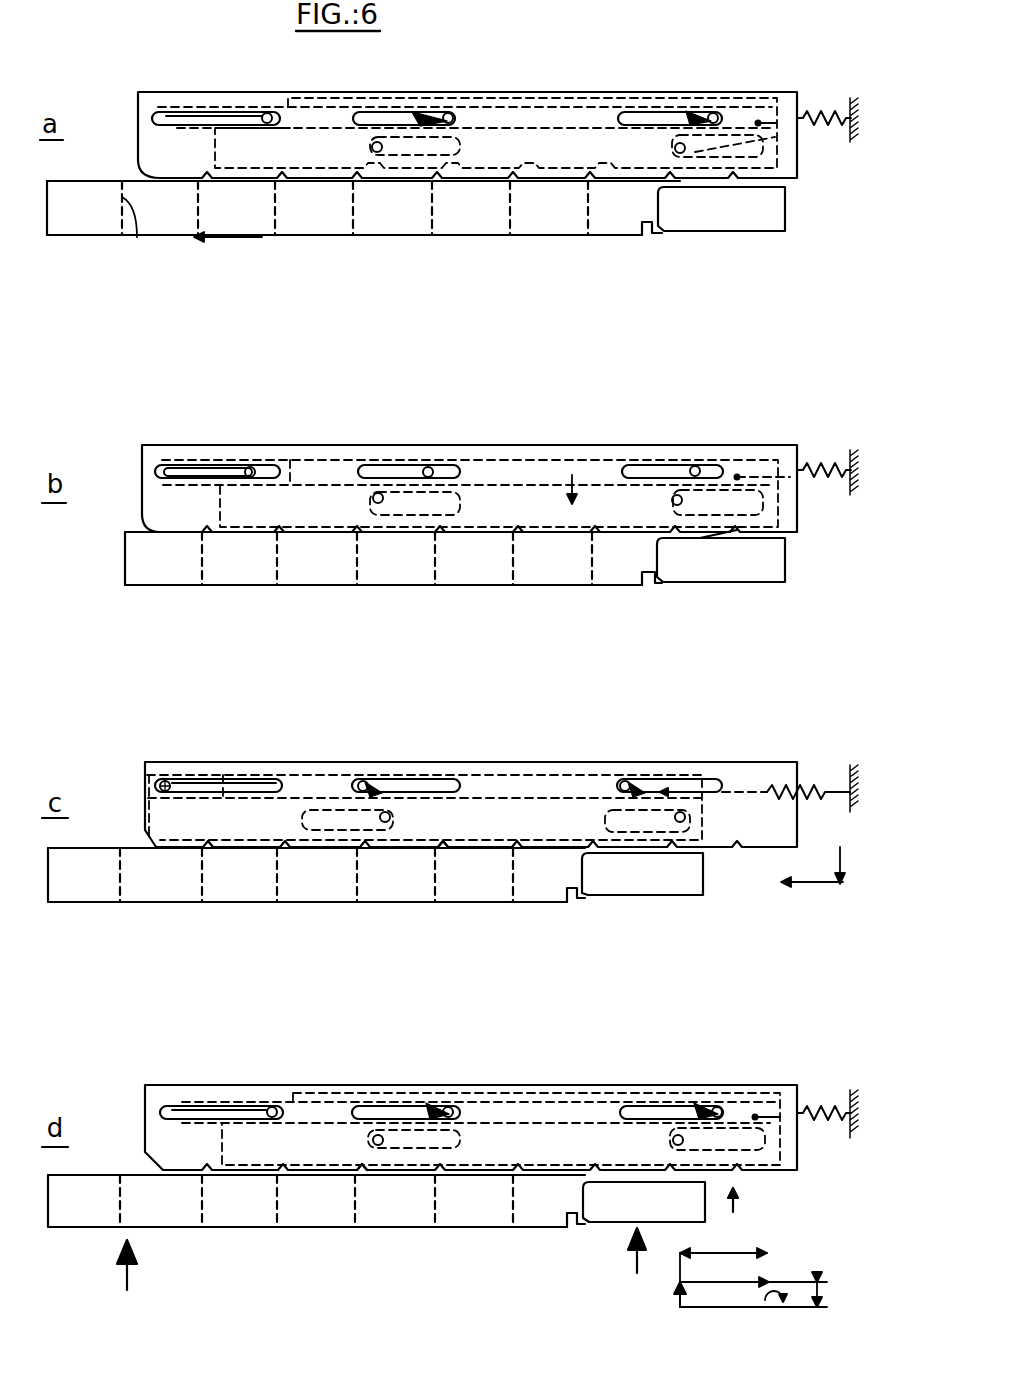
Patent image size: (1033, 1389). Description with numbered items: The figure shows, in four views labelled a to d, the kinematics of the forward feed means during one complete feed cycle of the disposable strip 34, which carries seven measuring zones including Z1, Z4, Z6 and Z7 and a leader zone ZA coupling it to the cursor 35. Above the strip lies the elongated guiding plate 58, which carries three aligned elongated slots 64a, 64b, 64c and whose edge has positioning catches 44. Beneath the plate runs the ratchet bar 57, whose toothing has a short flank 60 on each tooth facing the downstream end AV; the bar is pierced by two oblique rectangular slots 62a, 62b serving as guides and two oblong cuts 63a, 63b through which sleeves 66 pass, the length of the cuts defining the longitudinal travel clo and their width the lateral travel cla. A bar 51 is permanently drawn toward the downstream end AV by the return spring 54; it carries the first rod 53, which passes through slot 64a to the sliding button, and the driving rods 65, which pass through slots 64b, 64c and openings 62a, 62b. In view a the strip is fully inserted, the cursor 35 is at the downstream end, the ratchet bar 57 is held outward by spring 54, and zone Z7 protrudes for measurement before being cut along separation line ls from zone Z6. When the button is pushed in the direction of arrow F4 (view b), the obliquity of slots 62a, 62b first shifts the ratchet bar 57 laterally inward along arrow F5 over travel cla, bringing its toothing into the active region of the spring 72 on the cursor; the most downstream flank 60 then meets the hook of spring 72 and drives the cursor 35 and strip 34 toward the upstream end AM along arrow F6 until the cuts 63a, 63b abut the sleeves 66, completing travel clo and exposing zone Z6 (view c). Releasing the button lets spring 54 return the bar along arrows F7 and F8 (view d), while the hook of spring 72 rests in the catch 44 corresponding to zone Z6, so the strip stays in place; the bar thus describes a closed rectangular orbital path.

The guiding plate 58 is at (148, 106).
The ratchet bar 57 is at (345, 92).
The bar 51 is at (578, 106).
The first rod 53 is at (267, 112).
The return spring 54 is at (808, 112).
The elongated slot 64a is at (196, 116).
The elongated slot 64b is at (368, 118).
The elongated slot 64c is at (624, 116).
The rectangular shaped slot 62a is at (430, 109).
The rectangular shaped slot 62b is at (696, 111).
The driving rods 65 is at (456, 112).
The cut 63a is at (462, 147).
The cut 63b is at (793, 152).
The sleeves 66 is at (372, 498).
The disposable strip 34 is at (124, 577).
The cursor 35 is at (772, 203).
The short flank 60 is at (782, 533).
The spring 72 is at (728, 534).
The positioning catches 44 is at (460, 843).
The measuring zone Z7 is at (82, 192).
The measuring zone Z6 is at (137, 557).
The measuring zone Z4 is at (320, 218).
The measuring zone Z1 is at (528, 222).
The leader zone ZA is at (620, 226).
The separation line ls is at (124, 233).
The arrow F4 is at (243, 251).
The arrow F5 is at (715, 907).
The arrow F6 is at (743, 1310).
The arrow F7 is at (679, 1297).
The arrow F8 is at (714, 1283).
The longitudinal travel clo is at (723, 1242).
The lateral travel cla is at (814, 1266).
The upstream end AM is at (132, 1282).
The downstream end AV is at (701, 1230).